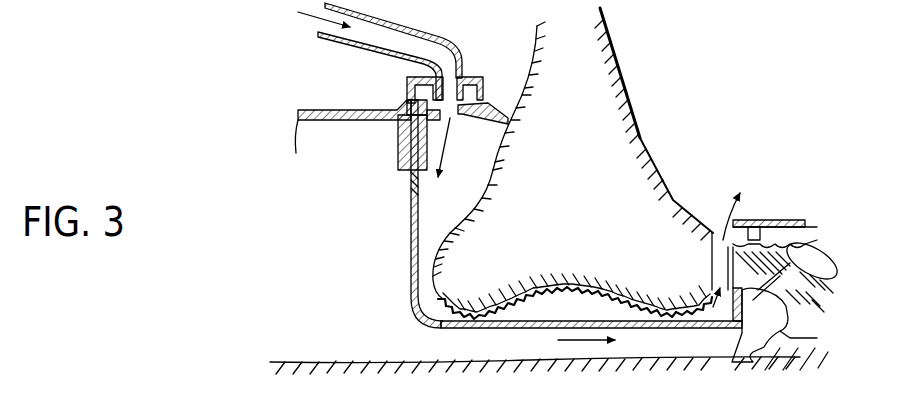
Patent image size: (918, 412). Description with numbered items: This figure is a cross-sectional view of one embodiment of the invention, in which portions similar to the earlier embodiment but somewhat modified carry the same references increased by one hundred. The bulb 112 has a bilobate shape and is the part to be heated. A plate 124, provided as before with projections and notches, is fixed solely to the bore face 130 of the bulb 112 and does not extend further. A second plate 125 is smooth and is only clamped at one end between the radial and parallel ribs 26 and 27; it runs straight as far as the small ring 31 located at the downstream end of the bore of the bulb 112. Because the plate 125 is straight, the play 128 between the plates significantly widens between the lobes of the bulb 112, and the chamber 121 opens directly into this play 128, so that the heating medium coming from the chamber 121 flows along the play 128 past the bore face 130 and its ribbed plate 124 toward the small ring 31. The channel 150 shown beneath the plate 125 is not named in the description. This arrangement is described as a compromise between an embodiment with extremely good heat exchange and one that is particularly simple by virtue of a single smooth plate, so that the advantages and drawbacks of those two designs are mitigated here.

The radial and parallel rib 26 is at (398, 153).
The radial and parallel rib 27 is at (418, 181).
The small ring 31 is at (730, 362).
The bulb 112 is at (593, 178).
The chamber 121 is at (455, 188).
The plate 124 is at (533, 292).
The plate 125 is at (410, 270).
The play 128 is at (440, 303).
The bore face 130 is at (617, 290).
The lower flow channel 150 is at (560, 306).